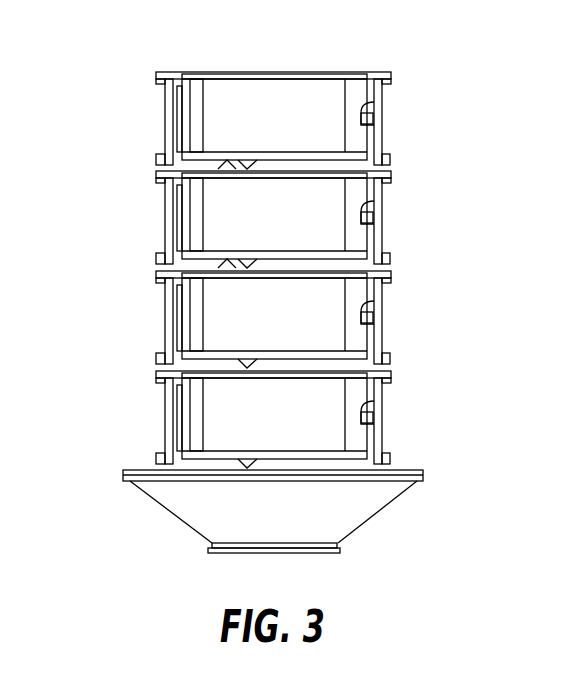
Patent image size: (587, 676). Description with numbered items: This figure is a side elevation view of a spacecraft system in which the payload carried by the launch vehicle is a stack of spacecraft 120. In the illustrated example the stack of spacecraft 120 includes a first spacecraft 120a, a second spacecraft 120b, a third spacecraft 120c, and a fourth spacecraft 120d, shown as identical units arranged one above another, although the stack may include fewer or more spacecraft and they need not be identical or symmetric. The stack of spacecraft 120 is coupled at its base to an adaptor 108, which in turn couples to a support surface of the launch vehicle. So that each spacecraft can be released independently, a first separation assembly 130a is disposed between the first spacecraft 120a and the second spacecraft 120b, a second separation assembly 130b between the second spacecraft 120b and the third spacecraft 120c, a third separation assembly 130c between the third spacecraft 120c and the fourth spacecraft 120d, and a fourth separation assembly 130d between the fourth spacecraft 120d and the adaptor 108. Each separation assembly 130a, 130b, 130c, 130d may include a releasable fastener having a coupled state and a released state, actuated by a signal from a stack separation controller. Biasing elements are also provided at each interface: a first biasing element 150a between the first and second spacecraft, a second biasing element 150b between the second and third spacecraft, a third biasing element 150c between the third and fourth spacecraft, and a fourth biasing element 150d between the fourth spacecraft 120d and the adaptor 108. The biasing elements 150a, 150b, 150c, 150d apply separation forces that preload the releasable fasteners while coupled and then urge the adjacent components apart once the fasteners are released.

The stack of spacecraft 120 is at (371, 57).
The first spacecraft 120a is at (322, 120).
The second spacecraft 120b is at (322, 219).
The third spacecraft 120c is at (322, 319).
The fourth spacecraft 120d is at (322, 419).
The first separation assembly 130a is at (167, 94).
The second separation assembly 130b is at (112, 221).
The third separation assembly 130c is at (112, 321).
The fourth separation assembly 130d is at (112, 421).
The first biasing element 150a is at (195, 82).
The second biasing element 150b is at (219, 216).
The third biasing element 150c is at (219, 316).
The fourth biasing element 150d is at (219, 416).
The adaptor 108 is at (355, 508).